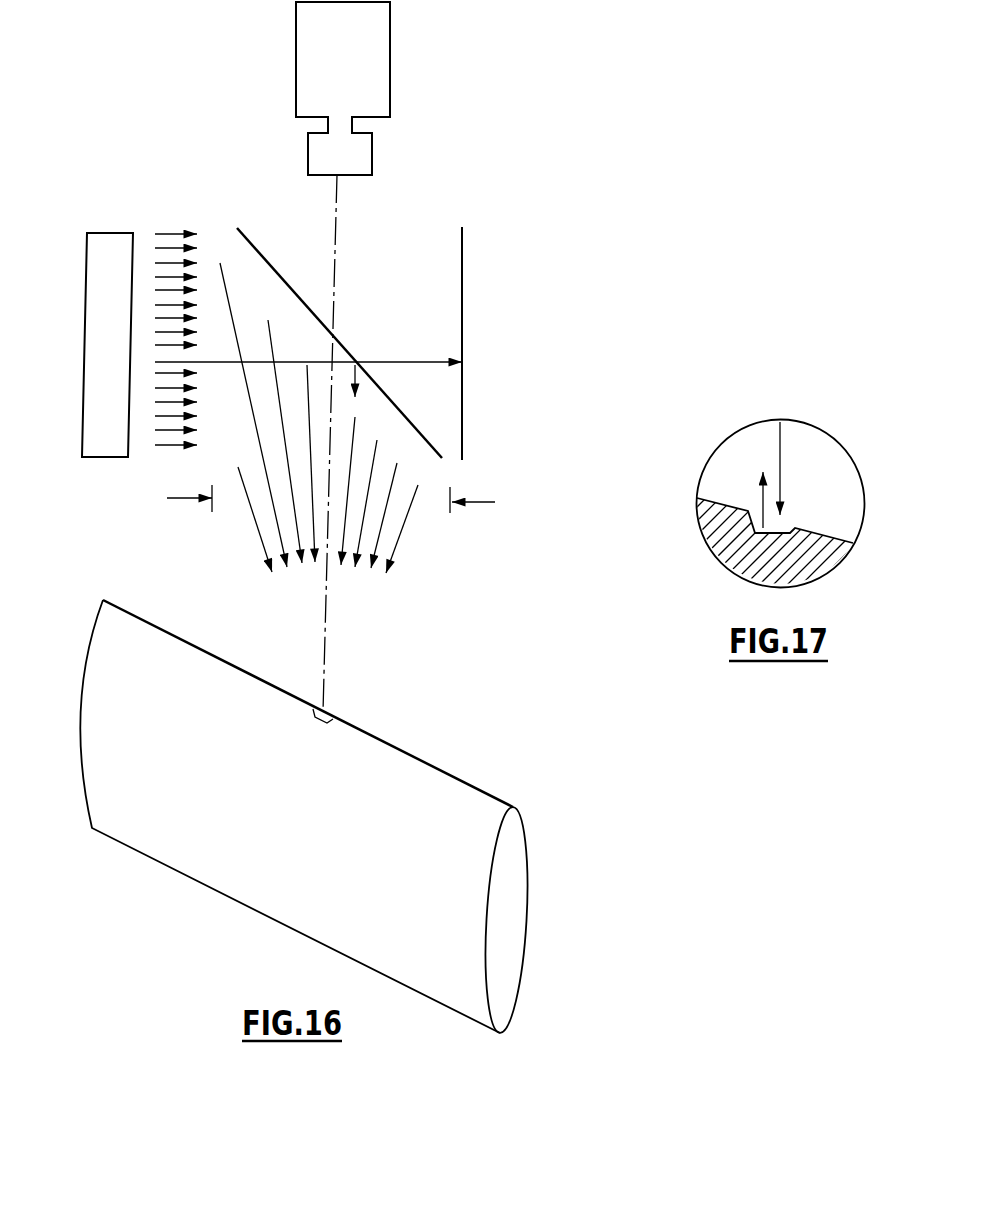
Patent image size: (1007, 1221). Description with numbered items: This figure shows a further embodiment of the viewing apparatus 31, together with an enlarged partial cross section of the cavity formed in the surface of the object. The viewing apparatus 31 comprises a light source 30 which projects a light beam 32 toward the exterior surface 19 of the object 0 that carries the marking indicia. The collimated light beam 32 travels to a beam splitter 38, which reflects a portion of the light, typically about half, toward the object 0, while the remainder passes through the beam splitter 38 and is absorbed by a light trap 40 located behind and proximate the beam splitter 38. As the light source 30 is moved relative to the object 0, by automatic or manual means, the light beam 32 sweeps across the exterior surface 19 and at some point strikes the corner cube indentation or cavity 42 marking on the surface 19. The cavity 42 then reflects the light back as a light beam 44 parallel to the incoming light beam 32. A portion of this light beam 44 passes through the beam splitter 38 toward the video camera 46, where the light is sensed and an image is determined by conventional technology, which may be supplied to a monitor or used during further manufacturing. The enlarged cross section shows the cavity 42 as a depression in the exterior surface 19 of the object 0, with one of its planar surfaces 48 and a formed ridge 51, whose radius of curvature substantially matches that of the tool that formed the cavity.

In FIG. 16, the object 0 is at (503, 915).
In FIG. 17, the object 0 is at (823, 563).
In FIG. 16, the exterior surface 19 is at (117, 605).
In FIG. 17, the exterior surface 19 is at (838, 537).
In FIG. 16, the light source 30 is at (102, 240).
In FIG. 16, the viewing apparatus 31 is at (153, 183).
In FIG. 16, the light beam 32 is at (180, 233).
In FIG. 17, the light beam 32 is at (785, 440).
In FIG. 16, the beam splitter 38 is at (340, 347).
In FIG. 16, the light trap 40 is at (464, 267).
In FIG. 16, the corner cube indentation or cavity 42 is at (332, 717).
In FIG. 17, the reflected light beam 44 is at (758, 505).
In FIG. 16, the video camera 46 is at (390, 42).
In FIG. 17, the planar surface 48 is at (782, 528).
In FIG. 16, the formed ridge 51 is at (482, 500).